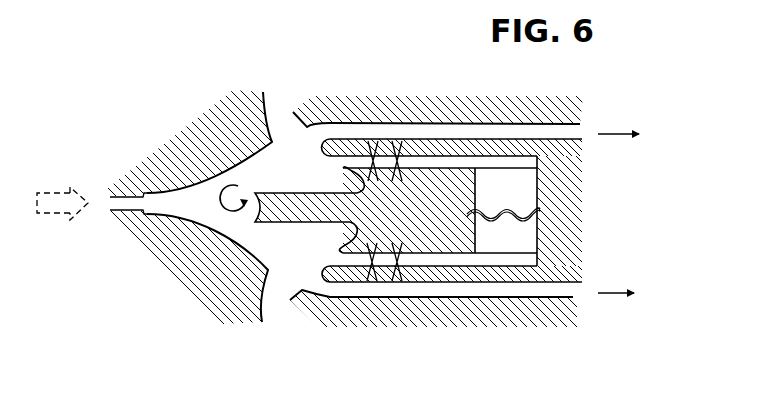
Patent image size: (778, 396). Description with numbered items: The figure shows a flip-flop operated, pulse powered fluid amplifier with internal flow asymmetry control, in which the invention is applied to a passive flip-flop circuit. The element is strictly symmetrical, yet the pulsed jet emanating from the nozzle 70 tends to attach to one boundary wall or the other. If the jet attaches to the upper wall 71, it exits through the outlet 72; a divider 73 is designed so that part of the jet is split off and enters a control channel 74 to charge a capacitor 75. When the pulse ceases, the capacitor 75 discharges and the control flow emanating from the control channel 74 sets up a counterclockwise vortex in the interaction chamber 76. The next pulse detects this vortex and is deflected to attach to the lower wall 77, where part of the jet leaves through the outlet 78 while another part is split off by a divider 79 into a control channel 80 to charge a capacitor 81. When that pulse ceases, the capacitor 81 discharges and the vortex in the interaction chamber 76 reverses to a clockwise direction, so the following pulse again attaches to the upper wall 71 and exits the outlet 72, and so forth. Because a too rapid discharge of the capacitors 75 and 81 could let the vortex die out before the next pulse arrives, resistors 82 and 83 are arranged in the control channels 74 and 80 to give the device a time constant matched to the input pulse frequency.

The nozzle 70 is at (136, 204).
The upper wall 71 is at (190, 170).
The outlet 72 is at (581, 130).
The divider 73 is at (327, 149).
The control channel 74 is at (345, 166).
The capacitor 75 is at (503, 188).
The interaction chamber 76 is at (207, 214).
The lower wall 77 is at (194, 232).
The outlet 78 is at (573, 297).
The divider 79 is at (327, 268).
The control channel 80 is at (341, 253).
The capacitor 81 is at (507, 243).
The resistor 82 is at (388, 152).
The resistor 83 is at (388, 252).